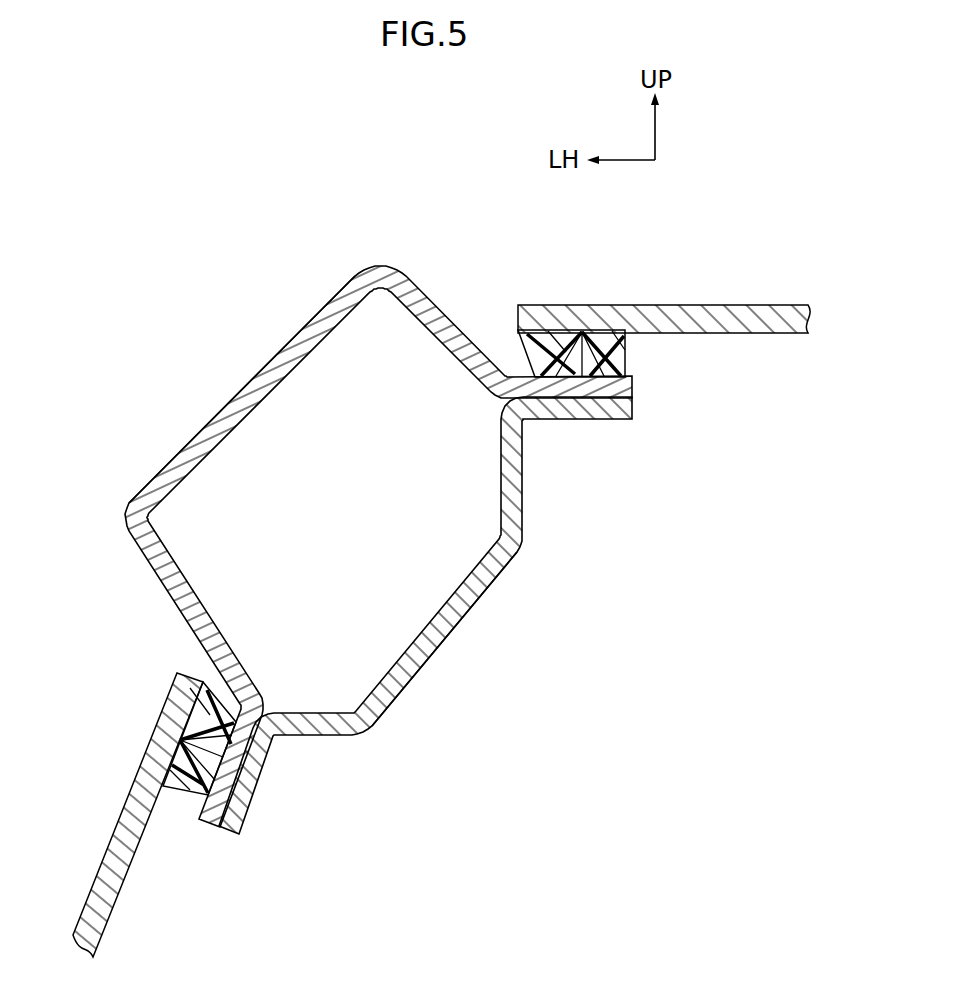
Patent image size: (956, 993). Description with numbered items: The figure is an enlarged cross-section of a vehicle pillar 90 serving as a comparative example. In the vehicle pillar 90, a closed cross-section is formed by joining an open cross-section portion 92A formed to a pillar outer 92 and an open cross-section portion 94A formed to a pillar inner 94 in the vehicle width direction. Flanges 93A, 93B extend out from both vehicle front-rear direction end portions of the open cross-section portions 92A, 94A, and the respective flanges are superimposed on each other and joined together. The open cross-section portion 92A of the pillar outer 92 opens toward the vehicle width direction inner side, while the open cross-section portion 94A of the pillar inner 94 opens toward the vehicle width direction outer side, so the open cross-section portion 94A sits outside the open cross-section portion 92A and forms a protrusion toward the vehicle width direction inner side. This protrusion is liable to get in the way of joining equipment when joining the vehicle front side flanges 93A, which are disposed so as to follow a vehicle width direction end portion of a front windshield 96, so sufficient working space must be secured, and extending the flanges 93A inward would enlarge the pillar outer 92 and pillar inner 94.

The vehicle pillar 90 is at (203, 236).
The pillar outer 92 is at (181, 443).
The open cross-section portion 92A is at (246, 374).
The flange 93A is at (633, 387).
The flange 93B is at (207, 828).
The pillar inner 94 is at (433, 671).
The open cross-section portion 94A is at (468, 622).
The front windshield 96 is at (731, 305).